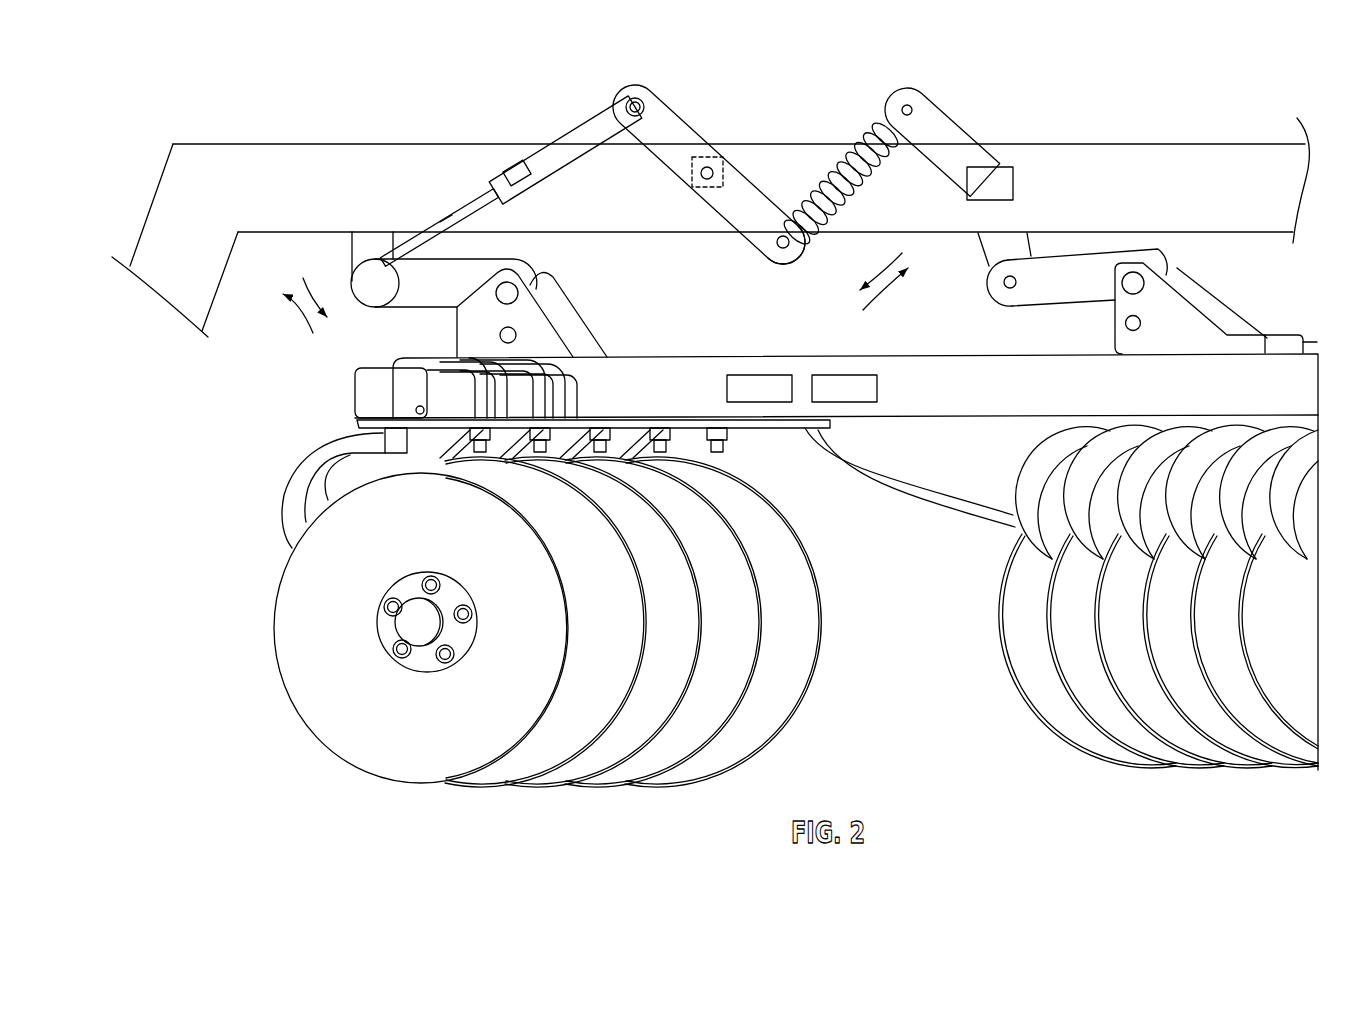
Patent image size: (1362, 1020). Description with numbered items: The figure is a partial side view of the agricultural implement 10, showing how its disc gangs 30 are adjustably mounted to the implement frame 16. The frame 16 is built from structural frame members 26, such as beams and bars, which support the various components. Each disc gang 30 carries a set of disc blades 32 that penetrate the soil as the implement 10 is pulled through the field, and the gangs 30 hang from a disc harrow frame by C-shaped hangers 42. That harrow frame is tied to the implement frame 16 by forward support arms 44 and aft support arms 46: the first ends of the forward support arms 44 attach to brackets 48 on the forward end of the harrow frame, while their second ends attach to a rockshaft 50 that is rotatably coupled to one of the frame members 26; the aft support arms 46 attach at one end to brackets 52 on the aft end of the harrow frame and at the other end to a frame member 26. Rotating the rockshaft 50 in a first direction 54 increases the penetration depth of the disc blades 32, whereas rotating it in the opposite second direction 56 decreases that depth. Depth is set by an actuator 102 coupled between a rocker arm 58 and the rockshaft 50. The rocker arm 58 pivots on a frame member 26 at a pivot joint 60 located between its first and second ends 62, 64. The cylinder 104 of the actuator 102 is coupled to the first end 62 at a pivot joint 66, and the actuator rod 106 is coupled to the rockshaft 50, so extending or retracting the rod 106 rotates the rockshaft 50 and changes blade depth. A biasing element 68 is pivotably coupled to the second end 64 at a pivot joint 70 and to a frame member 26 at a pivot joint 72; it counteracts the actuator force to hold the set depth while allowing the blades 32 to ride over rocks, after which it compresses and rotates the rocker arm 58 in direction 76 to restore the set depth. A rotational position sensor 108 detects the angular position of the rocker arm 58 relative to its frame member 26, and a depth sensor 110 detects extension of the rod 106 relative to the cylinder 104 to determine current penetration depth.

The agricultural implement 10 is at (204, 96).
The implement frame 16 is at (121, 172).
The structural frame members 26 is at (265, 143).
The disc gangs 30 is at (246, 611).
The disc blades 32 is at (337, 746).
The hangers 42 is at (280, 470).
The forward support arms 44 is at (513, 262).
The aft support arms 46 is at (1166, 262).
The brackets 48 is at (548, 320).
The rockshaft 50 is at (375, 298).
The brackets 52 is at (1243, 318).
The first direction 54 is at (291, 309).
The second direction 56 is at (305, 279).
The rocker arm 58 is at (658, 91).
The pivot joint 60 is at (706, 180).
The first end of rocker arm 62 is at (610, 81).
The second end of rocker arm 64 is at (742, 245).
The pivot joint 66 is at (634, 101).
The biasing element 68 is at (861, 131).
The pivot joint 70 is at (791, 250).
The pivot joint 72 is at (907, 104).
The second direction of rocker arm rotation 76 is at (890, 290).
The actuator 102 is at (558, 131).
The cylinder 104 is at (587, 120).
The rod 106 is at (445, 213).
The rotational position sensor 108 is at (704, 154).
The depth sensor 110 is at (506, 176).